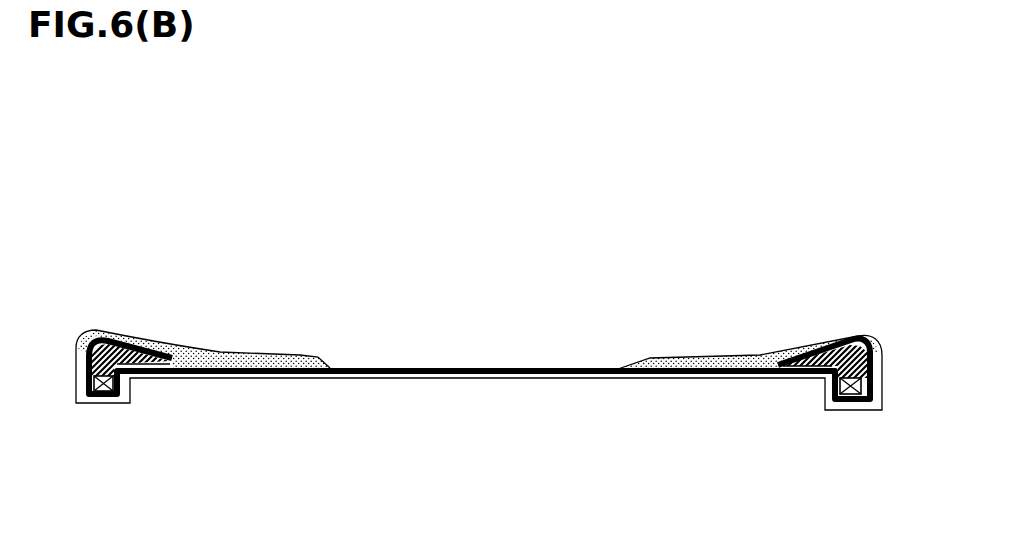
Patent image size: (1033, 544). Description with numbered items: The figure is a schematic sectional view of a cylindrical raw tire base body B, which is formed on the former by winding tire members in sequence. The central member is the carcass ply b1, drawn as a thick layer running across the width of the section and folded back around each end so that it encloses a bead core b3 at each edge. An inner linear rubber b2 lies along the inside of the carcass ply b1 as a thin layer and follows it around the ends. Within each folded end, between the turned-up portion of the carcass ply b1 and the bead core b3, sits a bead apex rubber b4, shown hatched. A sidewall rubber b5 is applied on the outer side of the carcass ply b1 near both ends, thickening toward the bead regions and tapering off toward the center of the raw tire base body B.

The raw tire base body B is at (745, 291).
The carcass ply b1 is at (481, 368).
The inner linear rubber b2 is at (399, 379).
The bead core b3 is at (104, 392).
The bead apex rubber b4 is at (114, 334).
The sidewall rubber b5 is at (243, 355).